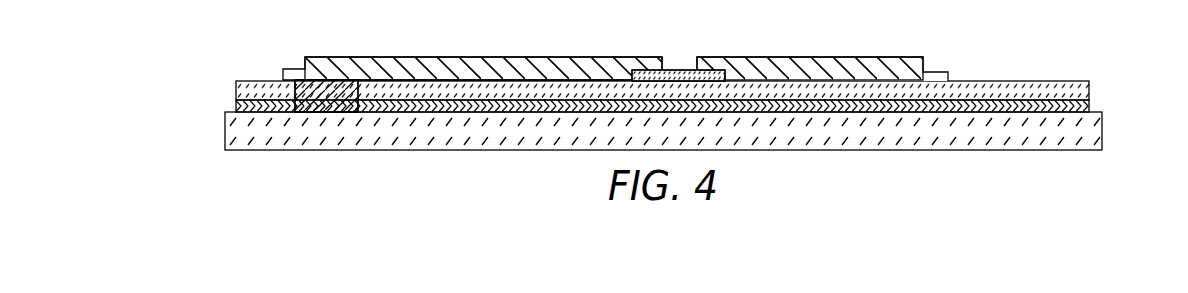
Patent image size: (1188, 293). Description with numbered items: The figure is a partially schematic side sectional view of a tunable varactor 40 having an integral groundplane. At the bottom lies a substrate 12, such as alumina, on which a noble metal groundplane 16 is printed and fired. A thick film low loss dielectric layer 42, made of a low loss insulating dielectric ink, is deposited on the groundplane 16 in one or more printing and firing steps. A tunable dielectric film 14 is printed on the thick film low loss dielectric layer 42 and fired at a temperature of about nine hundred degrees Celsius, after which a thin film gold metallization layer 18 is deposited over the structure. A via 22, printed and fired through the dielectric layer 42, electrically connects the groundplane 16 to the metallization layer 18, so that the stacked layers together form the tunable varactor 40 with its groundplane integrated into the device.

The substrate 12 is at (1102, 136).
The tunable dielectric film 14 is at (675, 70).
The groundplane 16 is at (1090, 107).
The metallization layer 18 is at (882, 59).
The via 22 is at (325, 102).
The tunable varactor 40 is at (203, 68).
The thick film low loss dielectric layer 42 is at (1030, 81).